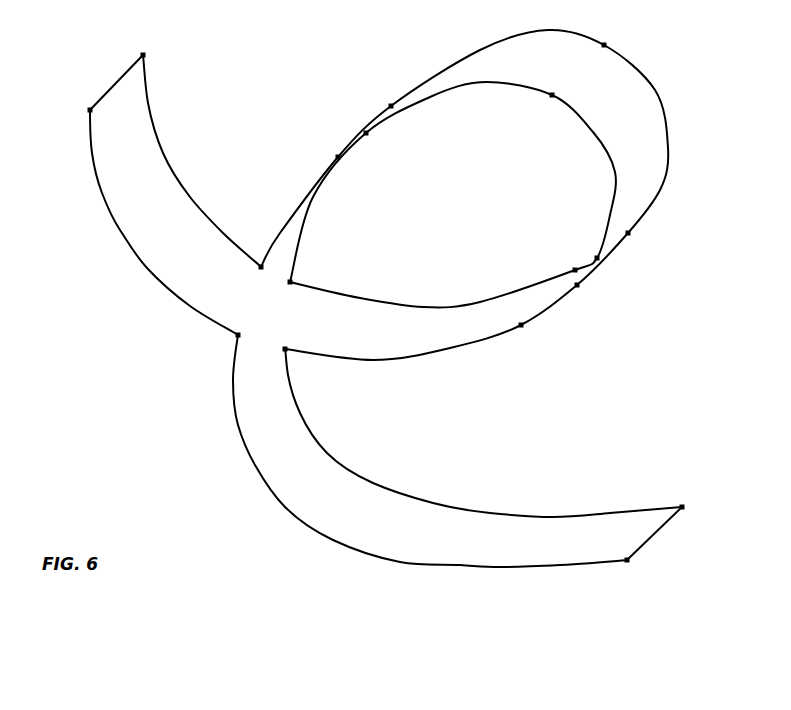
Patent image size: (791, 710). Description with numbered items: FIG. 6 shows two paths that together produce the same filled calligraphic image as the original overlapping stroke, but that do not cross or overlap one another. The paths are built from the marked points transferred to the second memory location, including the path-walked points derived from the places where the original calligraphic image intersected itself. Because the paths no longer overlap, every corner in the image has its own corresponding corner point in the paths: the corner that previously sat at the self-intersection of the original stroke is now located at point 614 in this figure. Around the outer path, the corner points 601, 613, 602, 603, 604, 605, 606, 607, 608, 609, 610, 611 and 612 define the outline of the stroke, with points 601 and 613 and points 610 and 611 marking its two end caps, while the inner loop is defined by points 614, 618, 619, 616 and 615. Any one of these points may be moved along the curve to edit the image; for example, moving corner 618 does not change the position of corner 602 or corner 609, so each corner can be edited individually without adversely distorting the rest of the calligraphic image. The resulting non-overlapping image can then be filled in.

The outline point 601 is at (162, 52).
The corner 602 is at (253, 252).
The outline point 603 is at (320, 149).
The outline point 604 is at (373, 95).
The outline point 605 is at (622, 37).
The outline point 606 is at (647, 244).
The outline point 607 is at (594, 295).
The outline point 608 is at (541, 336).
The corner 609 is at (307, 364).
The outline point 610 is at (701, 509).
The outline point 611 is at (645, 573).
The outline point 612 is at (219, 342).
The outline point 613 is at (70, 102).
The point 614 is at (311, 276).
The outline point 615 is at (554, 267).
The outline point 616 is at (580, 246).
The corner 618 is at (384, 145).
The outline point 619 is at (536, 110).